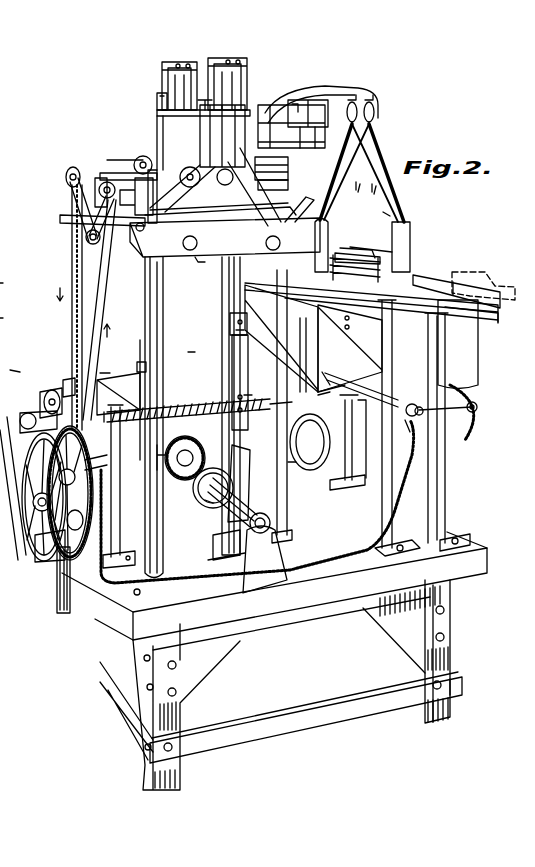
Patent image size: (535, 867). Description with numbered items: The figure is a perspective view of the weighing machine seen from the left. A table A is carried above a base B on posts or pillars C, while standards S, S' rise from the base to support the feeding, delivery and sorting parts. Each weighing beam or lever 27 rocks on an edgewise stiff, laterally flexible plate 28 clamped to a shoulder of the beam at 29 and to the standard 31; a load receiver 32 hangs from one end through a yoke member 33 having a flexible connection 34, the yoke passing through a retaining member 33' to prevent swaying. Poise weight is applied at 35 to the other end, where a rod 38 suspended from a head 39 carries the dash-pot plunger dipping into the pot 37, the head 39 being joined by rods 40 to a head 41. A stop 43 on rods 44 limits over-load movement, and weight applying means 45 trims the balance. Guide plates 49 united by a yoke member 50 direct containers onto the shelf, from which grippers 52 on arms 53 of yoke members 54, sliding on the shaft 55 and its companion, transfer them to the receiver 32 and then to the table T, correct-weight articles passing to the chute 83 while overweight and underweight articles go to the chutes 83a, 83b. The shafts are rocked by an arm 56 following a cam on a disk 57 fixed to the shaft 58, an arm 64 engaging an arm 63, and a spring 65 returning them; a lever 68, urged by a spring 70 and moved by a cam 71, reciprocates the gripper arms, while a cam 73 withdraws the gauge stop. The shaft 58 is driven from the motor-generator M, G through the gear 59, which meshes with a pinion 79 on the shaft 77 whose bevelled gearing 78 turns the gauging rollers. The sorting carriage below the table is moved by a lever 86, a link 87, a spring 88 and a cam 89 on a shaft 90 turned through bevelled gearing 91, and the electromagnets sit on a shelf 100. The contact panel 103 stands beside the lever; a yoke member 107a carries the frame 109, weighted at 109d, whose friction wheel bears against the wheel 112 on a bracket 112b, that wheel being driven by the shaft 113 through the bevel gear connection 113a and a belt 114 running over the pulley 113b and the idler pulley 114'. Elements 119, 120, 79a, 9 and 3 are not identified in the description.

The base B is at (297, 607).
The posts or pillars C is at (152, 301).
The arms 53 is at (226, 290).
The standard S' is at (269, 402).
The standard S is at (425, 428).
The table A is at (225, 230).
The liquid carrying pot 37 is at (177, 244).
The yoke member 107a is at (256, 246).
The article engaging and gripping members 52 is at (310, 257).
The rod 38 is at (202, 260).
The panel of insulating material 103 is at (167, 68).
The poise weight 35 is at (196, 97).
The head 41 is at (190, 102).
The rods 40 is at (178, 163).
The weight 109d is at (160, 153).
The weighing beam or lever 27 is at (268, 110).
The edgewise stiff and laterally flexible plate 28 is at (295, 107).
The shoulder of the beam 29 is at (293, 100).
The head 39 is at (291, 126).
The standard 31 is at (315, 107).
The stop 43 is at (290, 163).
The frame 109 is at (291, 181).
The yoke member 50 is at (293, 213).
The rods 44 is at (352, 100).
The flexible connection 34 is at (375, 100).
The weight applying means 45 is at (365, 198).
The table T is at (437, 282).
The chute 83b is at (485, 267).
The chute 83 is at (478, 317).
The yoke members 54 is at (350, 348).
The retaining members 33' is at (344, 318).
The chute 83a is at (336, 371).
The plates 49 is at (343, 253).
The load receiver 32 is at (372, 275).
The yoke member 33 is at (411, 202).
The shelf 100 is at (447, 383).
The arm 63 is at (468, 415).
The shaft 55 is at (388, 410).
The spring 70 is at (362, 397).
The lever 68 is at (320, 392).
The spring 65 is at (302, 360).
The bevelled gearing 78 is at (299, 380).
The cam 71 is at (390, 483).
The cam 73 is at (368, 455).
The arm 64 is at (413, 431).
The lever 86 is at (240, 333).
The spring 88 is at (191, 344).
The worm shaft 119 is at (203, 395).
The link 87 is at (246, 345).
The arm 56 is at (248, 347).
The shaft 58 is at (262, 443).
The disk 57 is at (290, 465).
The gear 59 is at (45, 558).
The shaft 77 is at (141, 362).
The motor M is at (104, 380).
The pinion 79 is at (65, 377).
The belt 79a is at (117, 387).
The generator G is at (168, 487).
The bevelled gearing 91 is at (180, 480).
The crank disc 120 is at (225, 497).
The cam 89 is at (213, 503).
The shaft 90 is at (233, 530).
The pulley 113b is at (68, 172).
The shaft 113 is at (70, 200).
The idler pulley 114' is at (65, 220).
The belt 114 is at (53, 307).
The bevel gear connection 113a is at (115, 310).
The bracket 112b is at (105, 180).
The friction wheel or disk 112 is at (182, 170).
The part 9 is at (5, 284).
The part 3 is at (5, 319).